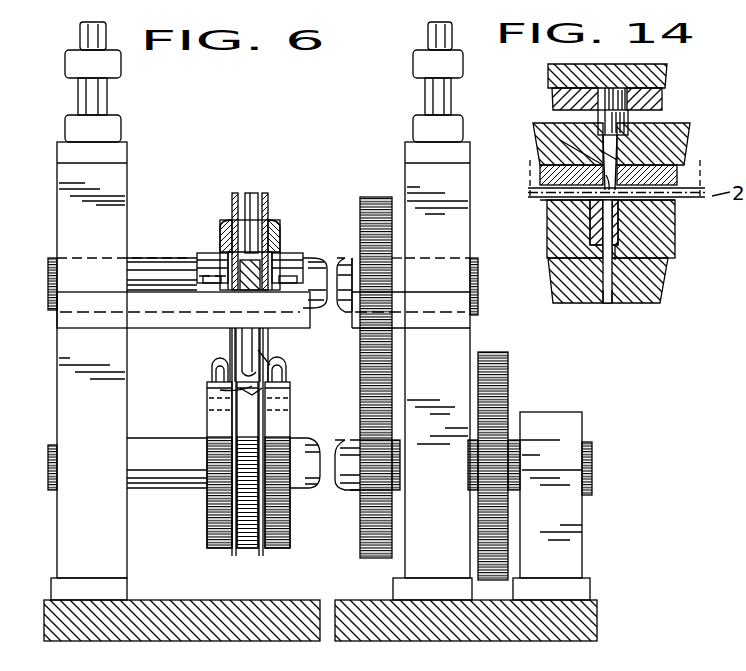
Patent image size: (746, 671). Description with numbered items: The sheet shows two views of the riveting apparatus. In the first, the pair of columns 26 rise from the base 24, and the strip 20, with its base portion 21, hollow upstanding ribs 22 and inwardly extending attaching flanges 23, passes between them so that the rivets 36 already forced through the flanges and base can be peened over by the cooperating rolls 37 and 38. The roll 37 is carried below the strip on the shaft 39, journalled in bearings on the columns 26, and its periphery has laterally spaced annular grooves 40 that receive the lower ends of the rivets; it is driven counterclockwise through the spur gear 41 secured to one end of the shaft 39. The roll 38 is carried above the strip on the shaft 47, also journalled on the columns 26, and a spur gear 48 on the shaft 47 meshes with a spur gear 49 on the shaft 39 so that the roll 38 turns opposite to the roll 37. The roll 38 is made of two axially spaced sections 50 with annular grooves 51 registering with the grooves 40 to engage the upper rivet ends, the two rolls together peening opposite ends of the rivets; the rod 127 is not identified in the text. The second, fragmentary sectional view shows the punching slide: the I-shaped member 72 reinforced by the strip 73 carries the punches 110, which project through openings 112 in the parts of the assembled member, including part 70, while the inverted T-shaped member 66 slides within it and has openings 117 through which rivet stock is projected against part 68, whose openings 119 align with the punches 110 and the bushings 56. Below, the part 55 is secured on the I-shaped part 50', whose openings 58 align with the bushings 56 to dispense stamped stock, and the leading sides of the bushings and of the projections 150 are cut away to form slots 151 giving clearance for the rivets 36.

In FIG. 6, the columns 26 is at (65, 228).
In FIG. 6, the base 24 is at (143, 641).
In FIG. 6, the shaft 47 is at (170, 262).
In FIG. 6, the roll 38 is at (282, 228).
In FIG. 6, the annular grooves 51 is at (238, 195).
In FIG. 6, the axially spaced sections 50 is at (252, 280).
In FIG. 6, the center rod 127 is at (252, 200).
In FIG. 6, the attaching flanges 23 is at (270, 352).
In FIG. 6, the base portion 21 is at (284, 370).
In FIG. 6, the strip 20 is at (290, 376).
In FIG. 6, the hollow upstanding ribs 22 is at (288, 385).
In FIG. 6, the rivets 36 is at (225, 395).
In FIG. 14, the rivets 36 is at (592, 230).
In FIG. 6, the shaft 39 is at (170, 485).
In FIG. 6, the roll 37 is at (215, 512).
In FIG. 6, the annular grooves 40 is at (235, 550).
In FIG. 6, the spur gear 48 is at (372, 197).
In FIG. 6, the spur gear 49 is at (368, 492).
In FIG. 6, the spur gear 41 is at (500, 372).
In FIG. 14, the strip 73 is at (560, 72).
In FIG. 14, the member 72 is at (660, 96).
In FIG. 14, the punches 110 is at (630, 118).
In FIG. 14, the openings 112 is at (604, 155).
In FIG. 14, the part 70 is at (684, 152).
In FIG. 14, the openings 117 is at (614, 162).
In FIG. 14, the openings 119 is at (600, 165).
In FIG. 14, the member 66 is at (668, 178).
In FIG. 14, the part 68 is at (575, 193).
In FIG. 14, the projections 150 is at (640, 199).
In FIG. 14, the part 55 is at (670, 244).
In FIG. 14, the slots 151 is at (595, 222).
In FIG. 14, the I-shaped part 50' is at (657, 251).
In FIG. 14, the openings 58 is at (608, 303).
In FIG. 14, the bushings 56 is at (616, 258).